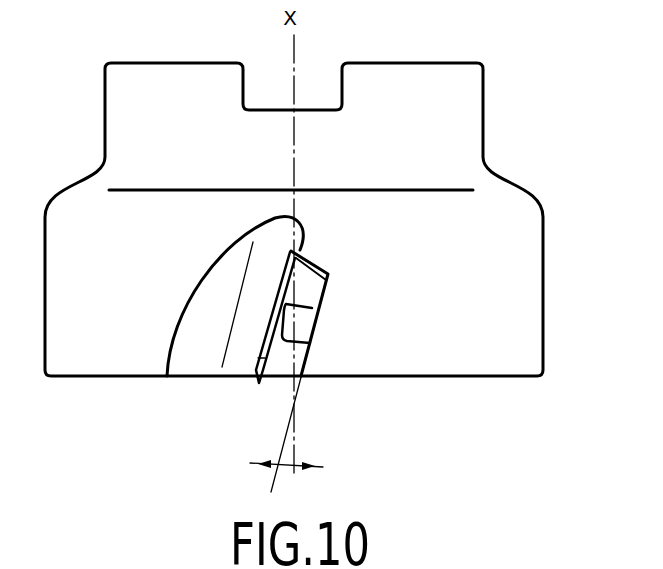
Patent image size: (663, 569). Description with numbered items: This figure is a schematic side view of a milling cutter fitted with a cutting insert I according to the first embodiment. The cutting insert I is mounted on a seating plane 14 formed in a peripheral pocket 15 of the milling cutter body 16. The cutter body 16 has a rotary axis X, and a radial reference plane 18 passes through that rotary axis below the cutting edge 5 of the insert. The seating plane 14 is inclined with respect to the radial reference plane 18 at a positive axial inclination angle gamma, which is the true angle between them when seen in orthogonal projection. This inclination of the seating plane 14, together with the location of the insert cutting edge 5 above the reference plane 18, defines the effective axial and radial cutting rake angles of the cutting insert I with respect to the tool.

The cutting edge 5 is at (268, 316).
The seating plane 14 is at (313, 327).
The peripheral pocket 15 is at (286, 268).
The milling cutter body 16 is at (457, 130).
The radial reference plane 18 is at (294, 432).
The cutting insert I is at (289, 376).